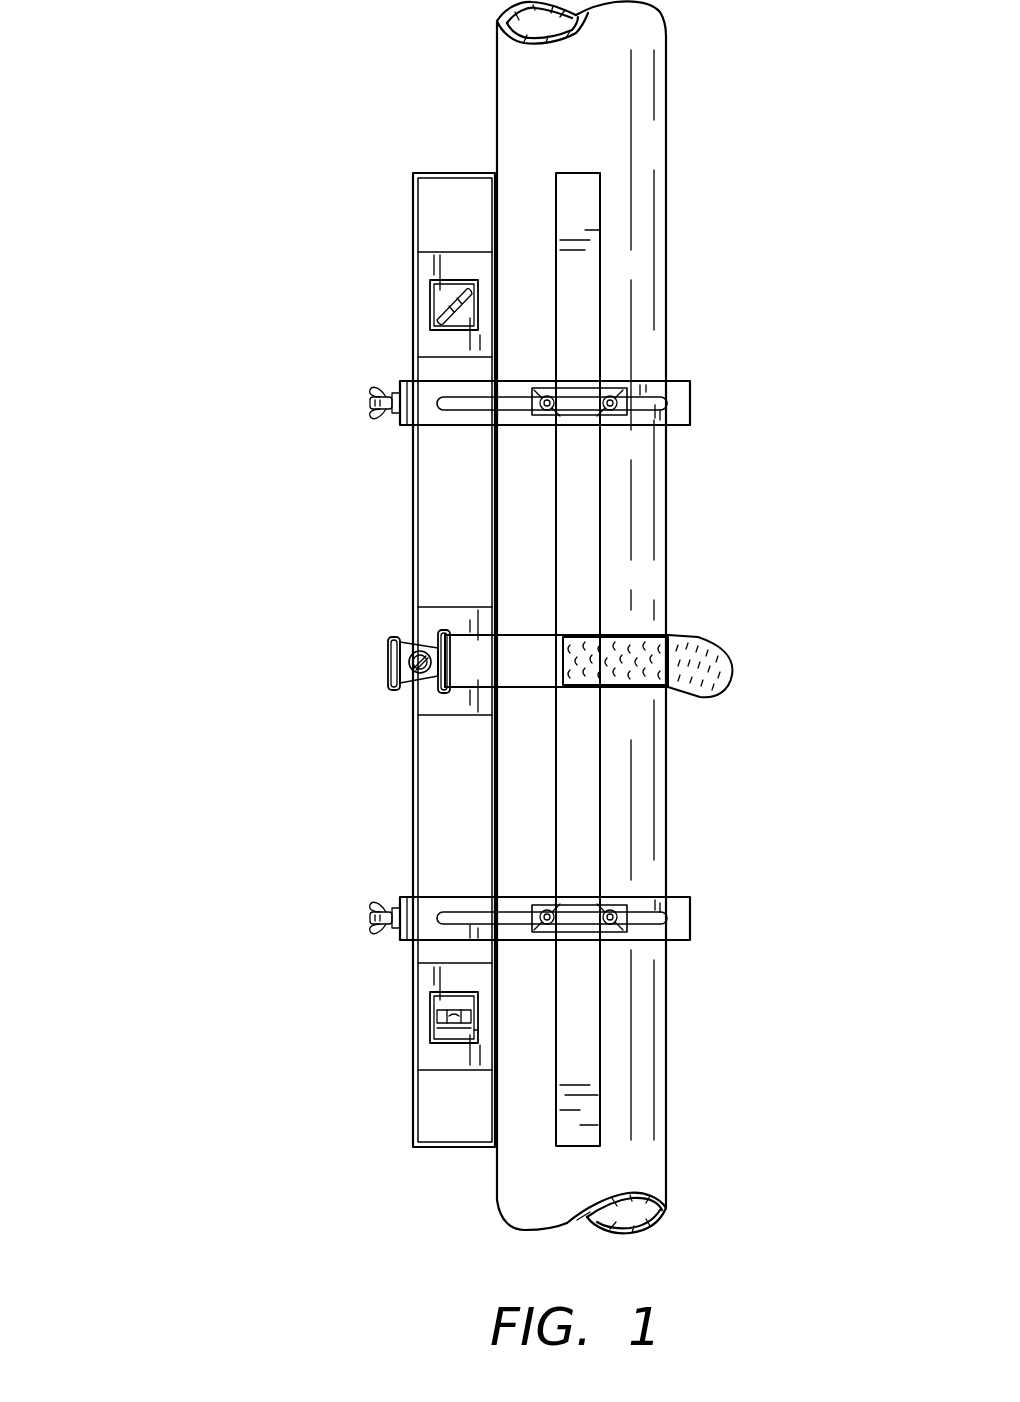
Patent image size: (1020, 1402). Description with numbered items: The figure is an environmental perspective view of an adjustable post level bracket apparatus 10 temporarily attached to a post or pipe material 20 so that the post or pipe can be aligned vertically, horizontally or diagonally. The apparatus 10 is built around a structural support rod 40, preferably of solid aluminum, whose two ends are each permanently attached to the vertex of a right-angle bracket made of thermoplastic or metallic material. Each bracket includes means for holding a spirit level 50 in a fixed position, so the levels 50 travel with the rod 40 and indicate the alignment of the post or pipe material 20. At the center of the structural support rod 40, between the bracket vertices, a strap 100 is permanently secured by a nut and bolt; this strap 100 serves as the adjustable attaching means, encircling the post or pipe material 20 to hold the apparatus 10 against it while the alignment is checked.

The post level bracket apparatus 10 is at (227, 195).
The post or pipe material 20 is at (666, 110).
The structural support rod 40 is at (415, 540).
The spirit level 50 is at (587, 288).
The strap 100 is at (700, 648).